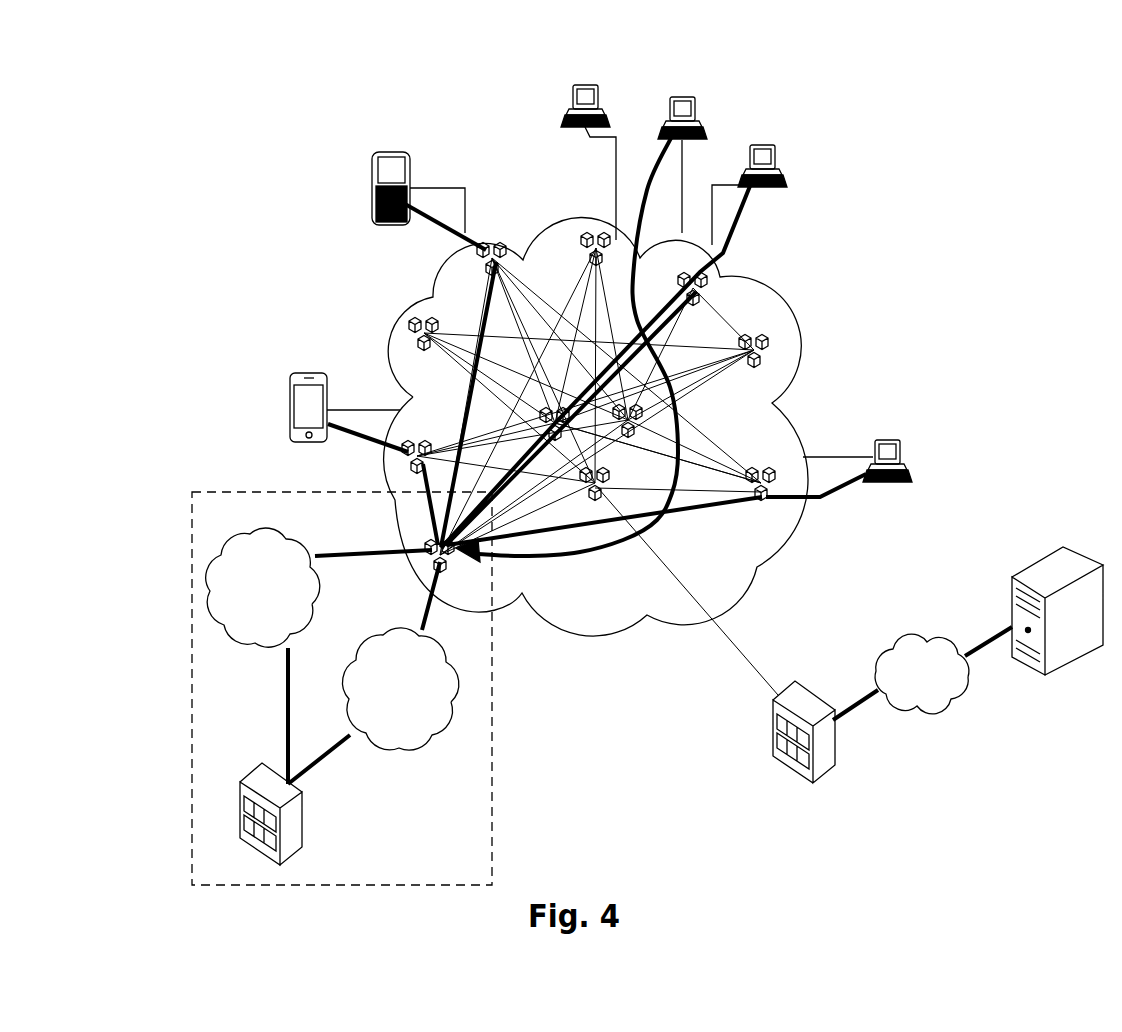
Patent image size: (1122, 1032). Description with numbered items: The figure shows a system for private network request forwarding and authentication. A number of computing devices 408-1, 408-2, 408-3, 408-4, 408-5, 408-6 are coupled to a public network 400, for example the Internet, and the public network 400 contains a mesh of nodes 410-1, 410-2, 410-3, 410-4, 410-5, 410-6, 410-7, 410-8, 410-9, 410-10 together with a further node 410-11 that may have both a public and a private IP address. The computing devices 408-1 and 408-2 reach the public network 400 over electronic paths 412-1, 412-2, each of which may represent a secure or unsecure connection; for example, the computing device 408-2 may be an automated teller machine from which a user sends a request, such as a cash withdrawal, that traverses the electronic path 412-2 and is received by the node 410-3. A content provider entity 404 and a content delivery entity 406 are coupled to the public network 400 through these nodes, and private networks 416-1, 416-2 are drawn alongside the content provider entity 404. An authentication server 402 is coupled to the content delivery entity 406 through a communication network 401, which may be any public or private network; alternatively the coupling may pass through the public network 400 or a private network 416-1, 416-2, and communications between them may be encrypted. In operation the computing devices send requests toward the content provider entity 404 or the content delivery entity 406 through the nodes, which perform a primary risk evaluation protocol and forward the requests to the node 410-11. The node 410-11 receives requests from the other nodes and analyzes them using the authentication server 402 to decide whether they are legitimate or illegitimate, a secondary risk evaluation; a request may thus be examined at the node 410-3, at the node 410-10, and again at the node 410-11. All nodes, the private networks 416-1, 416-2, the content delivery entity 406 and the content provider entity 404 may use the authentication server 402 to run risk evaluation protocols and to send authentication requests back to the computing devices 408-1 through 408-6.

The public network 400 is at (614, 633).
The communication network 401 is at (922, 674).
The authentication server 402 is at (1057, 611).
The content provider entity 404 is at (303, 828).
The content delivery entity 406 is at (836, 740).
The computing device 408-1 is at (290, 412).
The computing device 408-2 is at (372, 184).
The computing device 408-3 is at (582, 84).
The computing device 408-4 is at (758, 144).
The computing device 408-5 is at (678, 97).
The computing device 408-6 is at (887, 440).
The node 410-1 is at (400, 470).
The node 410-2 is at (410, 324).
The node 410-3 is at (491, 242).
The node 410-4 is at (581, 230).
The node 410-5 is at (700, 300).
The node 410-6 is at (772, 344).
The node 410-7 is at (758, 468).
The node 410-8 is at (588, 492).
The node 410-9 is at (632, 434).
The node 410-10 is at (548, 438).
The node 410-11 is at (446, 563).
The electronic path 412-1 is at (352, 432).
The electronic path 412-2 is at (438, 224).
The private network 416-1 is at (206, 570).
The private network 416-2 is at (453, 690).